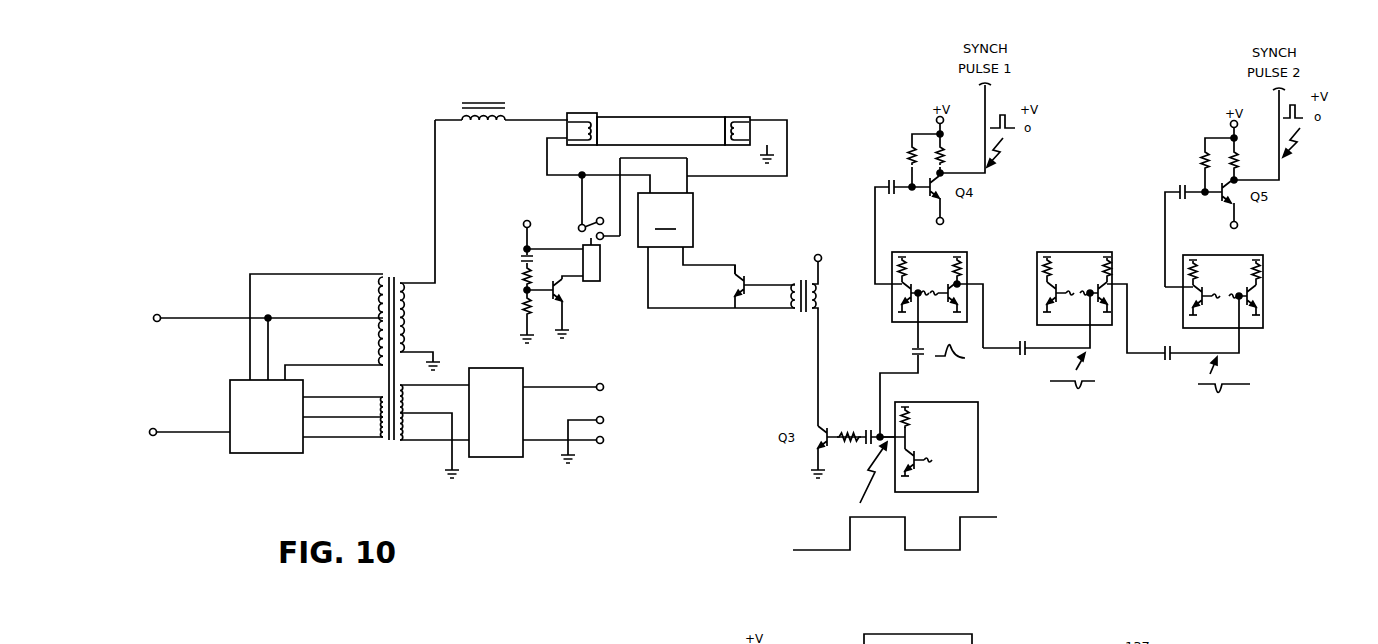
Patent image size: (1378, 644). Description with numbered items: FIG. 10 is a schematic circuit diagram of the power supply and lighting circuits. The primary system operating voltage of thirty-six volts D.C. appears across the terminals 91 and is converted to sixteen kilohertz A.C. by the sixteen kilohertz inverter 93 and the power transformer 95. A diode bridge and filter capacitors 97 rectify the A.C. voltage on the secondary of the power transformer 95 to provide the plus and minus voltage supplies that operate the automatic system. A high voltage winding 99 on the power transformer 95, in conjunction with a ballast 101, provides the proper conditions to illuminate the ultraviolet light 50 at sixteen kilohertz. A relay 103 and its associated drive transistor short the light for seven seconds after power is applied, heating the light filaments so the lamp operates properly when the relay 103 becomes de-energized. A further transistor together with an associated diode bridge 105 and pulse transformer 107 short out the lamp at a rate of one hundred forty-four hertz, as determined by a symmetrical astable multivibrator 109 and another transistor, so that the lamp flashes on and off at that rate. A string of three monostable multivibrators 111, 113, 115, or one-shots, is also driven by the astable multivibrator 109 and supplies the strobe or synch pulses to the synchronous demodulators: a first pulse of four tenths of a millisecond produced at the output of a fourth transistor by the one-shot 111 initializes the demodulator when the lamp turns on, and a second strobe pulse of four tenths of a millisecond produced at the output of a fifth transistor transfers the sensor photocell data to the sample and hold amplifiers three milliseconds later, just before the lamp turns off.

The ultraviolet light 50 is at (752, 122).
The terminals 91 is at (148, 425).
The 16 kHz inverter 93 is at (247, 452).
The power transformer 95 is at (384, 274).
The diode bridge and filter capacitors 97 is at (502, 460).
The high voltage winding 99 is at (410, 305).
The ballast 101 is at (480, 101).
The relay 103 is at (601, 273).
The diode bridge 105 is at (716, 250).
The pulse transformer 107 is at (797, 284).
The astable multivibrator 109 is at (980, 472).
The monostable multivibrator 111 is at (968, 263).
The monostable multivibrator 113 is at (1113, 263).
The monostable multivibrator 115 is at (1265, 264).